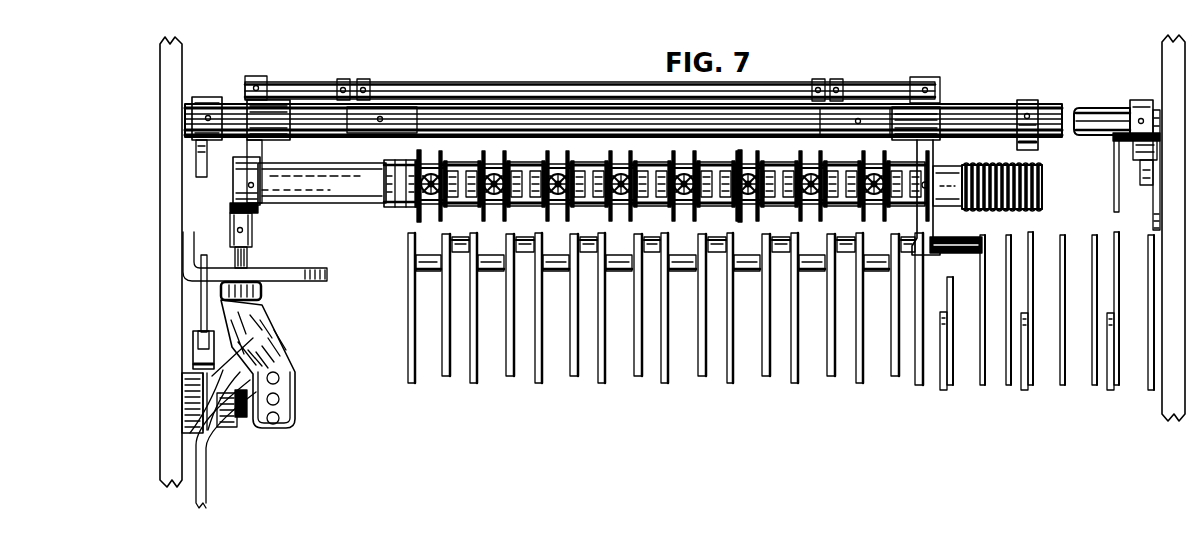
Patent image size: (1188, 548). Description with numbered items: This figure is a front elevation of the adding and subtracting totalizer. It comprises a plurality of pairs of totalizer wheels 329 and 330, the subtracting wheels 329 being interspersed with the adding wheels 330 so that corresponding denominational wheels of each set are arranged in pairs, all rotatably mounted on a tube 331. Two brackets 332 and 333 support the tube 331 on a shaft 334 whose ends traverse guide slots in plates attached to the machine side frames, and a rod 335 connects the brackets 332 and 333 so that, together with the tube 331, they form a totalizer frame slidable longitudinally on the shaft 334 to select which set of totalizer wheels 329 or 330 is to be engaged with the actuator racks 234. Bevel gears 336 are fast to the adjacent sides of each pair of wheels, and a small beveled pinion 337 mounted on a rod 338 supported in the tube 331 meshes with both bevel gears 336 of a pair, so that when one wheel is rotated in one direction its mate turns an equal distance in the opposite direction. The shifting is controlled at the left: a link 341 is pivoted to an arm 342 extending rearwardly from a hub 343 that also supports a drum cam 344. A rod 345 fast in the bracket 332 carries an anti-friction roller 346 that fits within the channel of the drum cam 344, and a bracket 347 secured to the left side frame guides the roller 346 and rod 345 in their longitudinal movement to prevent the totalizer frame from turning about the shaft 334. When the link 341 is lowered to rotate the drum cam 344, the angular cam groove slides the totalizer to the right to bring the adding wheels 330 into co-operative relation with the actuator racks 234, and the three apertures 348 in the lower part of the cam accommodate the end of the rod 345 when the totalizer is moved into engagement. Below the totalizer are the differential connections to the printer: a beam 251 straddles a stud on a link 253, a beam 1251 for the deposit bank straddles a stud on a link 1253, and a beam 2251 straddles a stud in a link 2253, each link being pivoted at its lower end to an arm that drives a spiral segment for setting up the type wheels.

The actuator racks 234 is at (650, 242).
The beam 251 is at (943, 390).
The link 253 is at (958, 266).
The subtracting totalizer wheels 329 is at (668, 160).
The adding totalizer wheels 330 is at (417, 156).
The tube 331 is at (317, 207).
The bracket 332 is at (255, 156).
The bracket 333 is at (933, 153).
The shaft 334 is at (463, 113).
The rod 335 is at (527, 96).
The bevel gears 336 is at (556, 158).
The beveled pinion 337 is at (425, 216).
The rod 338 is at (437, 158).
The link 341 is at (203, 303).
The arm 342 is at (194, 343).
The hub 343 is at (196, 386).
The drum cam 344 is at (283, 390).
The rod 345 is at (247, 256).
The anti-friction roller 346 is at (260, 296).
The bracket 347 is at (289, 268).
The apertures 348 is at (279, 414).
The beam 1251 is at (1023, 390).
The link 1253 is at (1030, 234).
The beam 2251 is at (1111, 390).
The link 2253 is at (1116, 234).